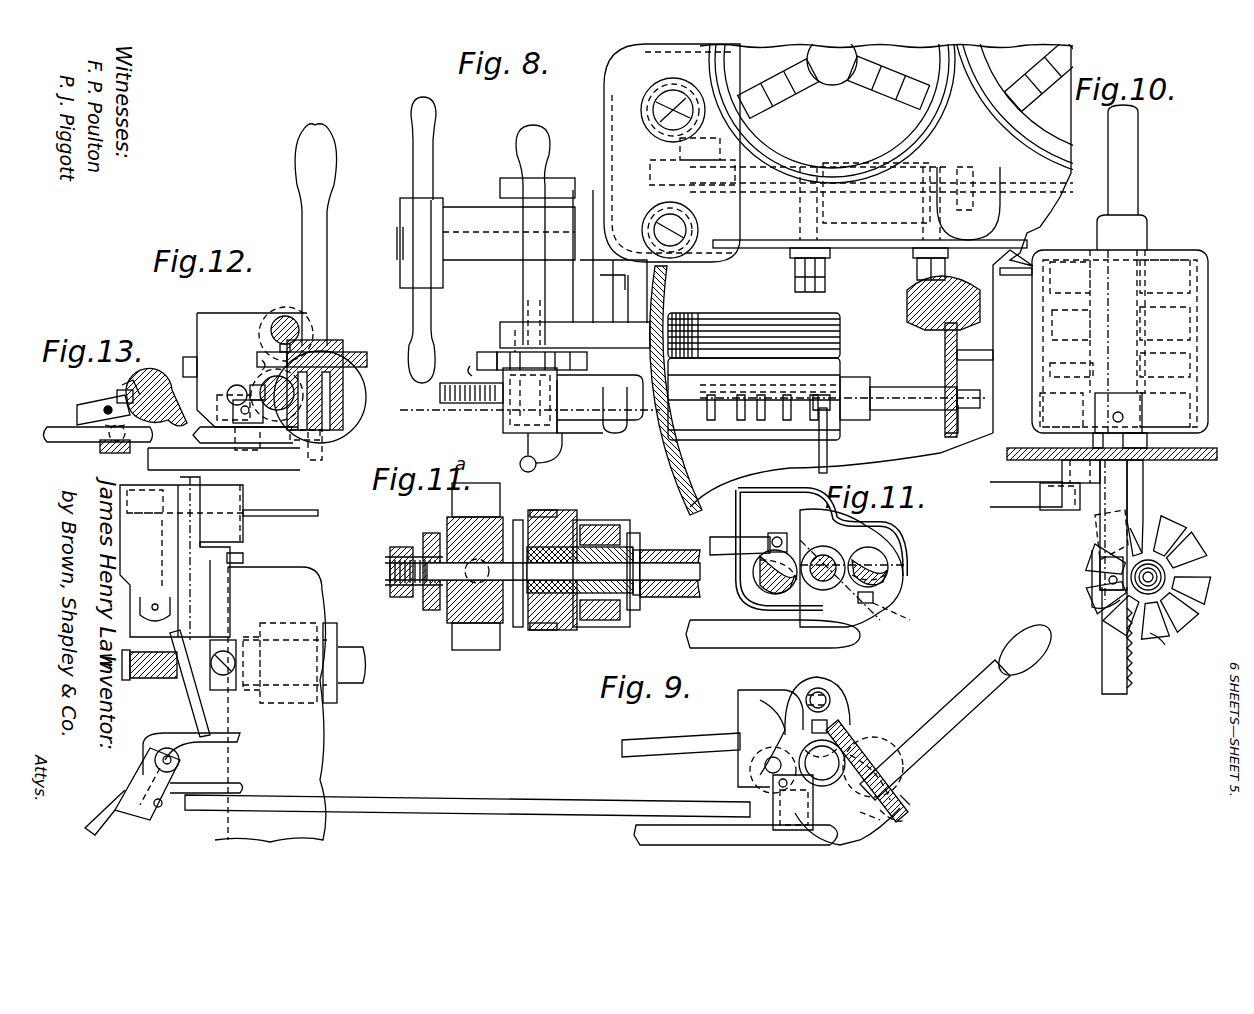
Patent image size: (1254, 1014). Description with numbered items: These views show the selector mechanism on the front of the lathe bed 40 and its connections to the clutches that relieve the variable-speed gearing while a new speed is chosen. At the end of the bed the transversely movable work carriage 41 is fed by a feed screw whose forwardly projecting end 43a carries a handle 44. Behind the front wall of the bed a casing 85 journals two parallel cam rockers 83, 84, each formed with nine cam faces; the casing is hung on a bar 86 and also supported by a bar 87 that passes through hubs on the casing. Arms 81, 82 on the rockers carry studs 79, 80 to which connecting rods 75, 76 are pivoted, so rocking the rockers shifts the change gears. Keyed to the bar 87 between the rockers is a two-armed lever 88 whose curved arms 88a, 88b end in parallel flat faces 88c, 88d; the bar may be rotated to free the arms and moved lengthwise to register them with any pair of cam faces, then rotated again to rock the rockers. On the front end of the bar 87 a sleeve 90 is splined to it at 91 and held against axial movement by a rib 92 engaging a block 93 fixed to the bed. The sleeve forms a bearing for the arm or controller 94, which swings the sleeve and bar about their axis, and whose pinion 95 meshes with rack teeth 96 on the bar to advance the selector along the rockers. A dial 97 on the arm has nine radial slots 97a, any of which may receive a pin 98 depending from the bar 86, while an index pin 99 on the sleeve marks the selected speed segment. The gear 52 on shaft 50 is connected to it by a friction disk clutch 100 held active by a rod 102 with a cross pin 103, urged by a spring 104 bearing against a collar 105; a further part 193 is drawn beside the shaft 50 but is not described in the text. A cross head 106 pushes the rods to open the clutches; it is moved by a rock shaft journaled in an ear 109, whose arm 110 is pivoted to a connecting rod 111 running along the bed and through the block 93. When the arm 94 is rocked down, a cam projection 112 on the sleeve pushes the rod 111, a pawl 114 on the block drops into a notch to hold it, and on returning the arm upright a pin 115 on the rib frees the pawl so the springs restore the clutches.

In FIG. 8, the bed 40 is at (668, 468).
In FIG. 10, the bed 40 is at (1205, 462).
In FIG. 9, the bed 40 is at (325, 766).
In FIG. 8, the work carriage 41 is at (608, 118).
In FIG. 8, the forwardly projecting end of feed screw 43a is at (478, 248).
In FIG. 8, the handle 44 is at (432, 190).
In FIG. 11A, the shaft 50 is at (680, 592).
In FIG. 9, the shaft 50 is at (360, 683).
In FIG. 11A, the gear 52 is at (543, 512).
In FIG. 9, the gear 52 is at (275, 615).
In FIG. 8, the connecting rod 75 is at (818, 446).
In FIG. 10, the connecting rod 75 is at (1150, 245).
In FIG. 12, the connecting rod 75 is at (315, 460).
In FIG. 11, the connecting rod 75 is at (725, 633).
In FIG. 9, the connecting rod 75 is at (722, 834).
In FIG. 10, the connecting rod 76 is at (1015, 276).
In FIG. 12, the connecting rod 76 is at (188, 355).
In FIG. 11, the connecting rod 76 is at (738, 534).
In FIG. 9, the connecting rod 76 is at (683, 740).
In FIG. 11, the stud 79 is at (902, 617).
In FIG. 11, the stud 80 is at (770, 537).
In FIG. 11, the arm 81 is at (867, 605).
In FIG. 11, the arm 82 is at (780, 533).
In FIG. 8, the cam rocker 83 is at (762, 413).
In FIG. 11, the cam rocker 83 is at (888, 575).
In FIG. 11, the cam rocker 84 is at (752, 572).
In FIG. 8, the casing 85 is at (838, 336).
In FIG. 10, the casing 85 is at (1048, 383).
In FIG. 12, the casing 85 is at (233, 313).
In FIG. 11, the casing 85 is at (905, 540).
In FIG. 9, the casing 85 is at (880, 738).
In FIG. 8, the bar 86 is at (620, 336).
In FIG. 10, the bar 86 is at (1108, 515).
In FIG. 9, the bar 86 is at (822, 688).
In FIG. 8, the bar 87 is at (887, 385).
In FIG. 10, the bar 87 is at (1140, 183).
In FIG. 12, the bar 87 is at (313, 450).
In FIG. 9, the bar 87 is at (838, 745).
In FIG. 10, the two-armed lever 88 is at (1113, 375).
In FIG. 11, the two-armed lever 88 is at (838, 552).
In FIG. 11, the arm of two-armed lever 88a is at (817, 535).
In FIG. 11, the arm of two-armed lever 88b is at (832, 601).
In FIG. 8, the flat face 88c is at (812, 441).
In FIG. 11, the flat face 88c is at (809, 478).
In FIG. 11, the flat face 88d is at (855, 628).
In FIG. 8, the sleeve 90 is at (588, 410).
In FIG. 10, the sleeve 90 is at (1128, 490).
In FIG. 12, the sleeve 90 is at (350, 404).
In FIG. 13, the sleeve 90 is at (160, 375).
In FIG. 9, the sleeve 90 is at (828, 740).
In FIG. 10, the spline 91 is at (1140, 515).
In FIG. 12, the rib 92 is at (262, 380).
In FIG. 13, the rib 92 is at (129, 377).
In FIG. 9, the rib 92 is at (808, 750).
In FIG. 8, the block 93 is at (627, 448).
In FIG. 10, the block 93 is at (1062, 472).
In FIG. 12, the block 93 is at (258, 445).
In FIG. 13, the block 93 is at (117, 453).
In FIG. 9, the block 93 is at (738, 776).
In FIG. 8, the arm or controller 94 is at (524, 280).
In FIG. 10, the arm or controller 94 is at (1170, 567).
In FIG. 12, the arm or controller 94 is at (318, 262).
In FIG. 9, the arm or controller 94 is at (940, 718).
In FIG. 8, the pinion 95 is at (503, 412).
In FIG. 12, the pinion 95 is at (345, 378).
In FIG. 8, the rack teeth 96 is at (445, 400).
In FIG. 12, the rack teeth 96 is at (263, 440).
In FIG. 9, the rack teeth 96 is at (895, 740).
In FIG. 8, the dial or disk 97 is at (487, 356).
In FIG. 10, the dial or disk 97 is at (1168, 633).
In FIG. 12, the dial or disk 97 is at (340, 355).
In FIG. 9, the dial or disk 97 is at (905, 800).
In FIG. 8, the radial slots 97a is at (482, 362).
In FIG. 10, the radial slots 97a is at (1168, 652).
In FIG. 12, the radial slots 97a is at (262, 352).
In FIG. 9, the radial slots 97a is at (895, 772).
In FIG. 8, the pin 98 is at (512, 340).
In FIG. 10, the pin 98 is at (1100, 583).
In FIG. 12, the pin 98 is at (281, 316).
In FIG. 9, the pin 98 is at (810, 720).
In FIG. 8, the index pin 99 is at (580, 370).
In FIG. 12, the index pin 99 is at (262, 352).
In FIG. 11A, the friction disk clutch 100 is at (635, 620).
In FIG. 11A, the rod 102 is at (530, 615).
In FIG. 11A, the cross pin 103 is at (632, 552).
In FIG. 11A, the spring 104 is at (450, 600).
In FIG. 11A, the collar 105 is at (414, 581).
In FIG. 9, the collar 105 is at (168, 648).
In FIG. 9, the cross head 106 is at (177, 683).
In FIG. 9, the ear 109 is at (185, 768).
In FIG. 9, the arm 110 is at (245, 780).
In FIG. 8, the connecting rod 111 is at (615, 430).
In FIG. 12, the connecting rod 111 is at (212, 445).
In FIG. 13, the connecting rod 111 is at (72, 442).
In FIG. 9, the connecting rod 111 is at (587, 797).
In FIG. 8, the cam projection 112 is at (612, 475).
In FIG. 13, the cam projection 112 is at (135, 428).
In FIG. 9, the cam projection 112 is at (878, 825).
In FIG. 10, the pawl 114 is at (1048, 507).
In FIG. 12, the pawl 114 is at (230, 397).
In FIG. 13, the pawl 114 is at (82, 408).
In FIG. 9, the pawl 114 is at (690, 777).
In FIG. 10, the pin 115 is at (1060, 496).
In FIG. 12, the pin 115 is at (250, 388).
In FIG. 13, the pin 115 is at (117, 392).
In FIG. 9, the pin 115 is at (775, 700).
In FIG. 9, the plate 193 is at (340, 645).